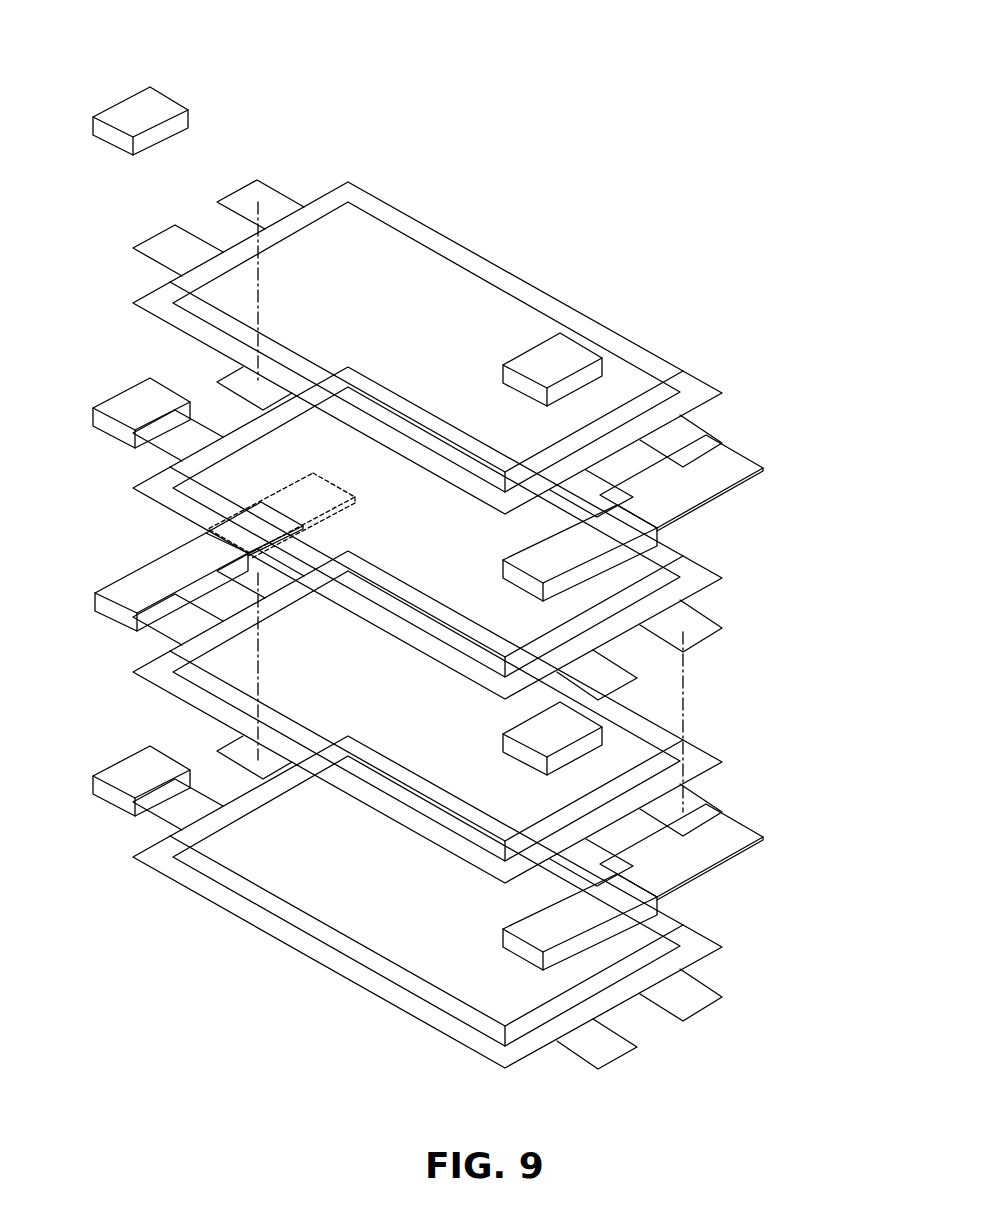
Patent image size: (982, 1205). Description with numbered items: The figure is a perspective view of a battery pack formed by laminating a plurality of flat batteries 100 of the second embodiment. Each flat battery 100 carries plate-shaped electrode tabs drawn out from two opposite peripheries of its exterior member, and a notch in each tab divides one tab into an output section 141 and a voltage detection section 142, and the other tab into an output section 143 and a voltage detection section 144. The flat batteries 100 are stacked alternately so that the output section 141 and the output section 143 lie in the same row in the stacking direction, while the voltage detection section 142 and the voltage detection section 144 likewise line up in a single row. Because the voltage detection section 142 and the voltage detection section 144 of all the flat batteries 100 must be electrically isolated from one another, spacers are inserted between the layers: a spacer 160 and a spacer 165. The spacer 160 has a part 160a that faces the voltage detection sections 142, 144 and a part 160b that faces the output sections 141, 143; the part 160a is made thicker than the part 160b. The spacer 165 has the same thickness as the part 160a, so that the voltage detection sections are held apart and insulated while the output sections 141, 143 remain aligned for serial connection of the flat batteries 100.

The flat battery 100 is at (512, 197).
The output section 141 is at (247, 195).
The voltage detection section 142 is at (162, 240).
The output section 143 is at (240, 378).
The voltage detection section 144 is at (170, 445).
The spacer 160 is at (97, 578).
The part of spacer facing voltage detection sections 160a is at (145, 560).
The part of spacer facing output sections 160b is at (748, 480).
The spacer 165 is at (128, 110).